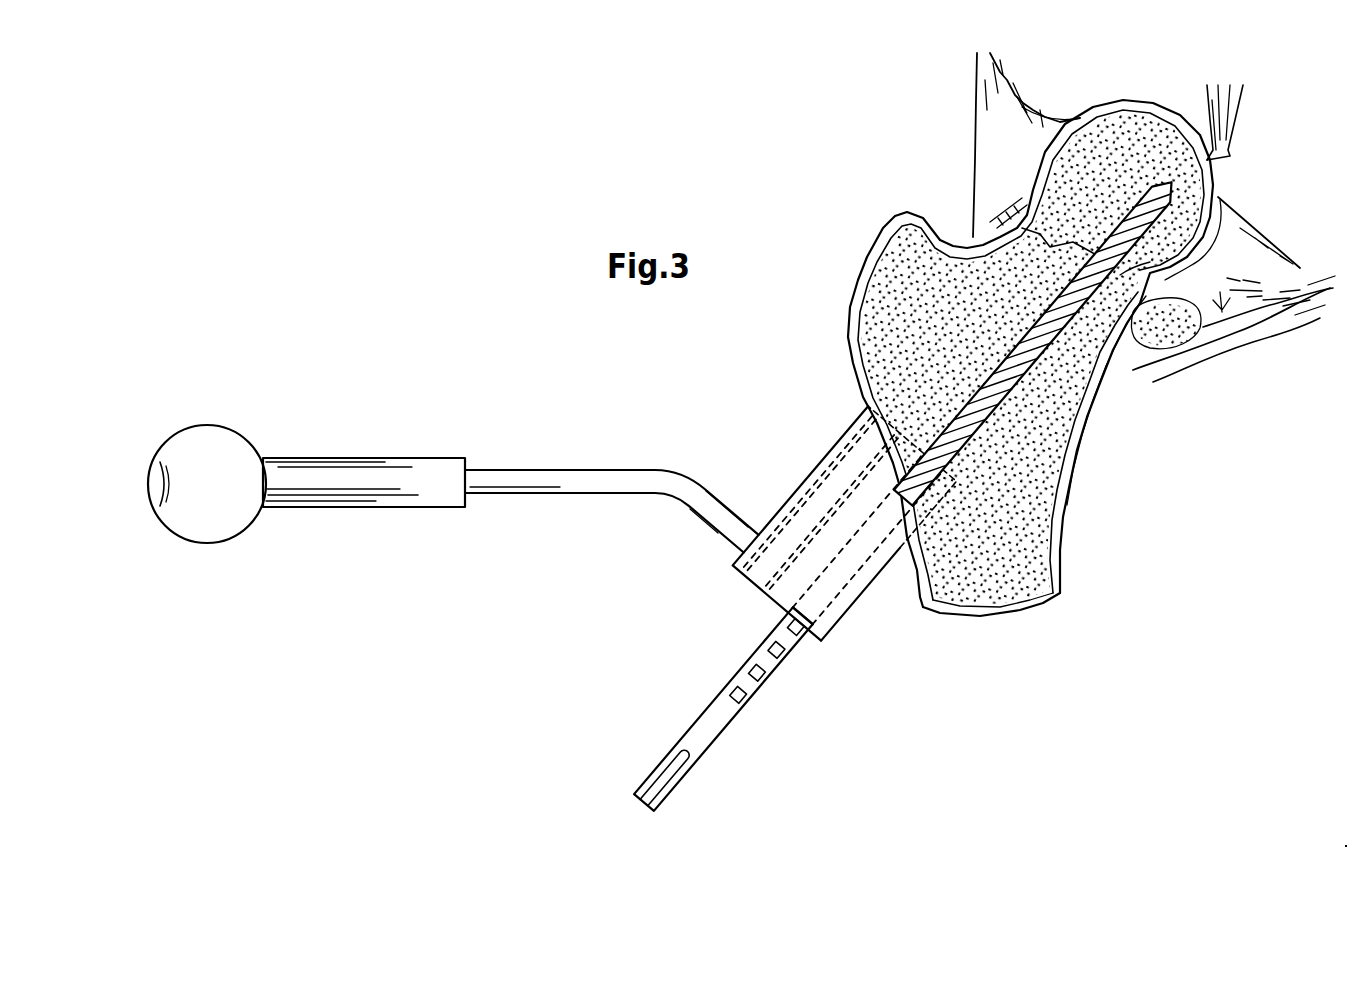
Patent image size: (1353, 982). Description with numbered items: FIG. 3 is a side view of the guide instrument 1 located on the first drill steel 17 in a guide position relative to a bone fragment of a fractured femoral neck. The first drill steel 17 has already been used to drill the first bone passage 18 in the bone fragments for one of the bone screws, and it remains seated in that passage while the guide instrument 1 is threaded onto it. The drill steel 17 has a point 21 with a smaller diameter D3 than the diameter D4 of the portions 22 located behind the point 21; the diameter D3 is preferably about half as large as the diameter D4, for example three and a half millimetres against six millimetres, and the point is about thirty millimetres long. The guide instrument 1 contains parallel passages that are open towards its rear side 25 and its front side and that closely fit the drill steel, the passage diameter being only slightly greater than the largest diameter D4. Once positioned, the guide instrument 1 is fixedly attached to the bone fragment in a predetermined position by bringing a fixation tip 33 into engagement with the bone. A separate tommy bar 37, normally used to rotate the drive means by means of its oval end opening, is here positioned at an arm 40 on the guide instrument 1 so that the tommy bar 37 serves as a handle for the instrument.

The guide instrument 1 is at (778, 472).
The first drill steel 17 is at (703, 712).
The first bone passage 18 is at (970, 443).
The point 21 is at (1190, 262).
The portions 22 is at (980, 393).
The rear side 25 is at (773, 600).
The fixation tip 33 is at (860, 408).
The tommy bar 37 is at (358, 457).
The arm 40 is at (518, 470).
The diameter of the point D3 is at (1220, 200).
The diameter of the portions D4 is at (1073, 417).